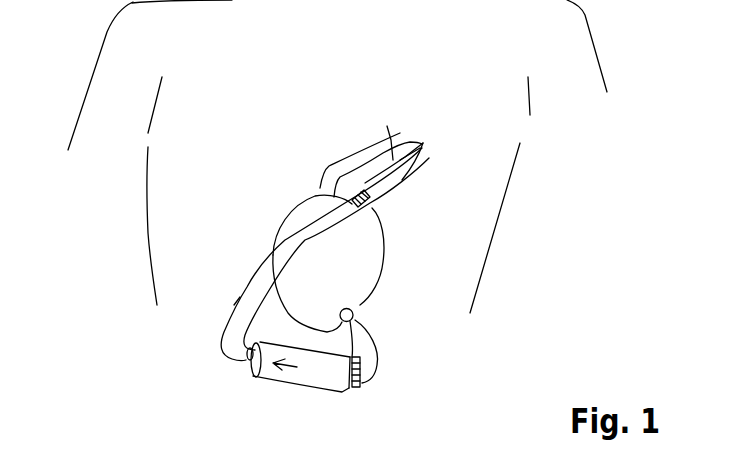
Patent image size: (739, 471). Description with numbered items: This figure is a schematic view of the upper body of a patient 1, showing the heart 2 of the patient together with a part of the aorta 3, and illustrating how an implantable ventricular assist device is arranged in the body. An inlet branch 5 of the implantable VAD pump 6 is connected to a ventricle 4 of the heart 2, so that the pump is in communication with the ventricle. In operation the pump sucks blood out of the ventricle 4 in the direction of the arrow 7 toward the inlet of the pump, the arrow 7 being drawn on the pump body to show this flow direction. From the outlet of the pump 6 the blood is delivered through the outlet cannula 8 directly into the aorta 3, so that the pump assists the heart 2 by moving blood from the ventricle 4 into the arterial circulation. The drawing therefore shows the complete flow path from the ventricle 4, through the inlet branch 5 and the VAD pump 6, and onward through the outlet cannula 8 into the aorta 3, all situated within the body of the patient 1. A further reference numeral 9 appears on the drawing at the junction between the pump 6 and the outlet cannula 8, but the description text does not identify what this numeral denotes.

The patient 1 is at (523, 211).
The heart 2 is at (385, 243).
The aorta 3 is at (402, 180).
The ventricle 4 is at (357, 302).
The inlet branch 5 is at (372, 337).
The VAD pump 6 is at (307, 392).
The arrow 7 is at (292, 370).
The outlet cannula 8 is at (247, 286).
The connector 9 is at (358, 388).